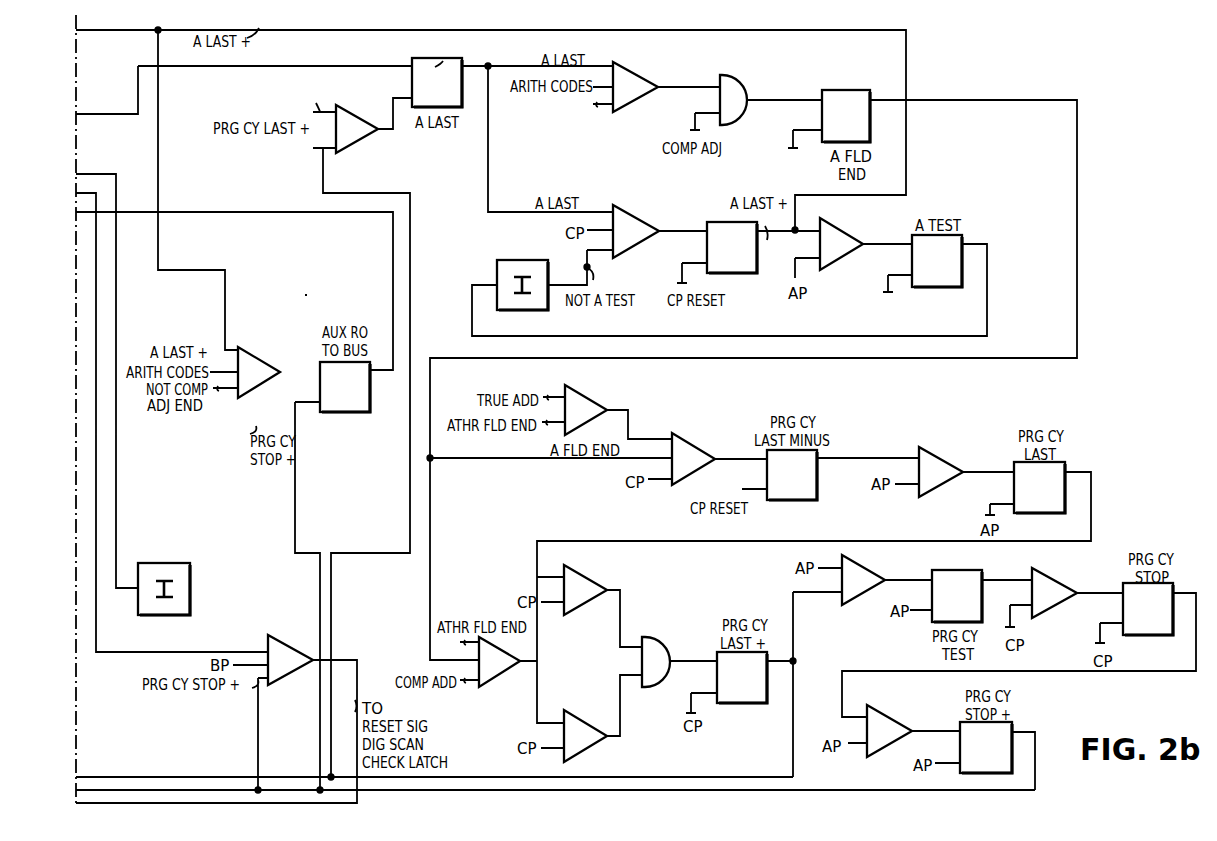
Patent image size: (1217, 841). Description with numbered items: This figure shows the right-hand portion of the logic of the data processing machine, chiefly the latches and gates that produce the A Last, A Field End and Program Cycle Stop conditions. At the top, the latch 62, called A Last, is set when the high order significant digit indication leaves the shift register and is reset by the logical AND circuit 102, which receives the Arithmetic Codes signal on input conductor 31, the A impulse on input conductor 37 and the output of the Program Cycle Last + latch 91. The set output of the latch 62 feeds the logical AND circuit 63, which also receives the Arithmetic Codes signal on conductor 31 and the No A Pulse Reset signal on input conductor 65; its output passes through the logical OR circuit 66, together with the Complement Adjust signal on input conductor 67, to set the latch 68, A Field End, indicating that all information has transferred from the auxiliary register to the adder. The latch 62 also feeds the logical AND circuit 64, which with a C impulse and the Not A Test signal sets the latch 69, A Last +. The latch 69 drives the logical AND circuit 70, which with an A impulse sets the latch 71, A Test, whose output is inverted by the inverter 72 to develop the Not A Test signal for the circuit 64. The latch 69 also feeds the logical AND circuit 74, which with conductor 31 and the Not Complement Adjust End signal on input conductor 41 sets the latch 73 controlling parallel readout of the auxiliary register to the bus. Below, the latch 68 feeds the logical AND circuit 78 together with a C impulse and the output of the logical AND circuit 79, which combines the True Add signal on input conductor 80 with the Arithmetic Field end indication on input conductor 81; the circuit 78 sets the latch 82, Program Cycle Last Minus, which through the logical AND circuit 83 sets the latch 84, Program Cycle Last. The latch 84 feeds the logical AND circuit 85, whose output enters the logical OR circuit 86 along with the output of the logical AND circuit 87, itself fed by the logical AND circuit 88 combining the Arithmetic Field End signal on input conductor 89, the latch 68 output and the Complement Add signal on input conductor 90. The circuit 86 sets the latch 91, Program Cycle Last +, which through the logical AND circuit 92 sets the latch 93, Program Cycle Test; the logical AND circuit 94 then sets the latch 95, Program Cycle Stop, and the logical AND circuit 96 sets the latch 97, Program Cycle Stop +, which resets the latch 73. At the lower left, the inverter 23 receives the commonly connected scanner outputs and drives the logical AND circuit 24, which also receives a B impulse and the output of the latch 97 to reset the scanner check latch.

The inverter 23 is at (169, 564).
The logical AND circuit 24 is at (283, 644).
The input conductor 31 is at (605, 58).
The input conductor 37 is at (942, 763).
The input conductor 41 is at (232, 392).
The latch 62 is at (440, 58).
The logical AND circuit 63 is at (631, 72).
The logical AND circuit 64 is at (632, 218).
The input conductor 65 is at (603, 107).
The logical OR circuit 66 is at (738, 87).
The input conductor 67 is at (692, 119).
The latch 68 is at (843, 90).
The latch 69 is at (748, 273).
The logical AND circuit 70 is at (842, 238).
The latch 71 is at (934, 287).
The inverter 72 is at (522, 260).
The latch 73 is at (370, 400).
The logical AND circuit 74 is at (259, 361).
The logical AND circuit 78 is at (689, 444).
The logical AND circuit 79 is at (578, 397).
The input conductor 80 is at (549, 395).
The input conductor 81 is at (550, 425).
The latch 82 is at (817, 496).
The logical AND circuit 83 is at (933, 457).
The latch 84 is at (1039, 513).
The logical AND circuit 85 is at (587, 583).
The logical OR circuit 86 is at (656, 644).
The logical AND circuit 87 is at (584, 725).
The logical AND circuit 88 is at (502, 680).
The input conductor 89 is at (460, 644).
The input conductor 90 is at (469, 683).
The latch 91 is at (746, 703).
The logical AND circuit 92 is at (861, 573).
The latch 93 is at (954, 571).
The logical AND circuit 94 is at (1049, 582).
The latch 95 is at (1148, 637).
The logical AND circuit 96 is at (885, 721).
The latch 97 is at (1012, 730).
The logical AND circuit 102 is at (355, 111).